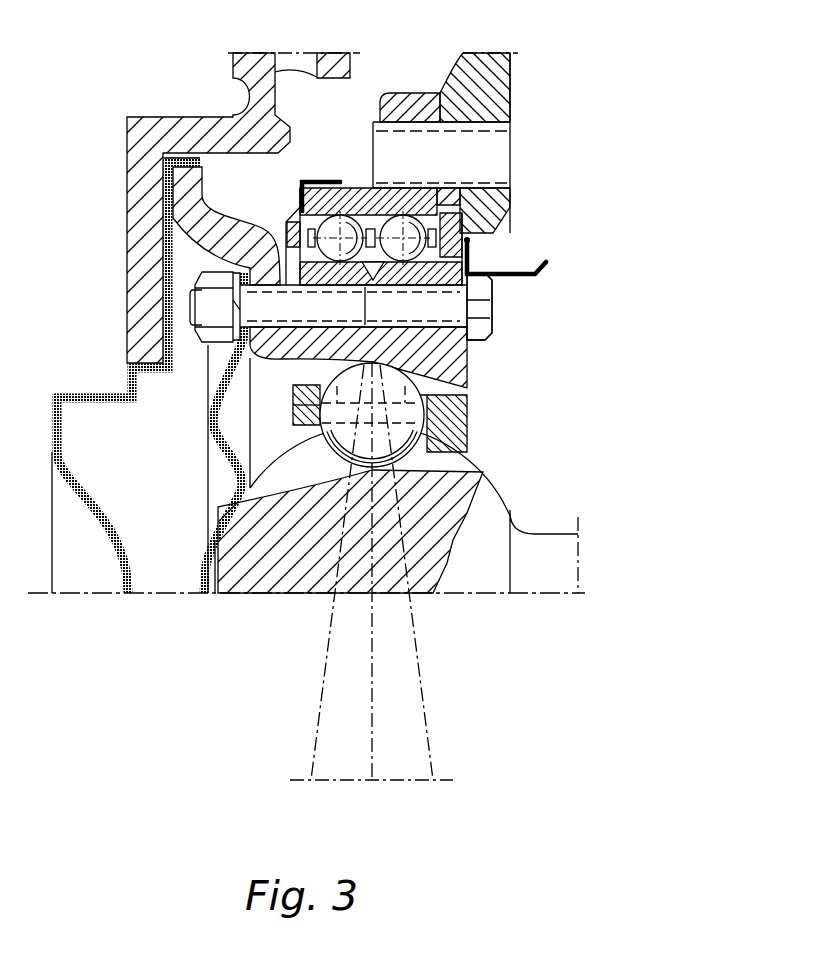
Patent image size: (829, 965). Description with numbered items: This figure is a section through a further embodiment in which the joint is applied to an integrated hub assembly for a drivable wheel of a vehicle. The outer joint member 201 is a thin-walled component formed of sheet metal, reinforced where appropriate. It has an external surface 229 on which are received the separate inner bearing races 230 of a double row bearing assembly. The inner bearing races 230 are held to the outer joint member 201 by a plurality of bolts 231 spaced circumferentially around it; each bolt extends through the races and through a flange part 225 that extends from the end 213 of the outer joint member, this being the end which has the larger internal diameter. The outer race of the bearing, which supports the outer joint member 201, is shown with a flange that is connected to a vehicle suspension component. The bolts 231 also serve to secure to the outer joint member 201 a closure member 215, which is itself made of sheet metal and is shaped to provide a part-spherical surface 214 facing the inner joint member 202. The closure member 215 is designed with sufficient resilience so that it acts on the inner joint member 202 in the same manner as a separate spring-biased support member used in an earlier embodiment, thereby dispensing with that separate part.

The outer joint member 201 is at (470, 350).
The inner joint member 202 is at (297, 578).
The end of the outer joint member 213 is at (212, 397).
The part-spherical surface 214 is at (228, 535).
The closure member 215 is at (205, 594).
The flange part 225 is at (193, 190).
The external surface 229 is at (457, 318).
The inner bearing races 230 is at (352, 268).
The bolts 231 is at (480, 293).